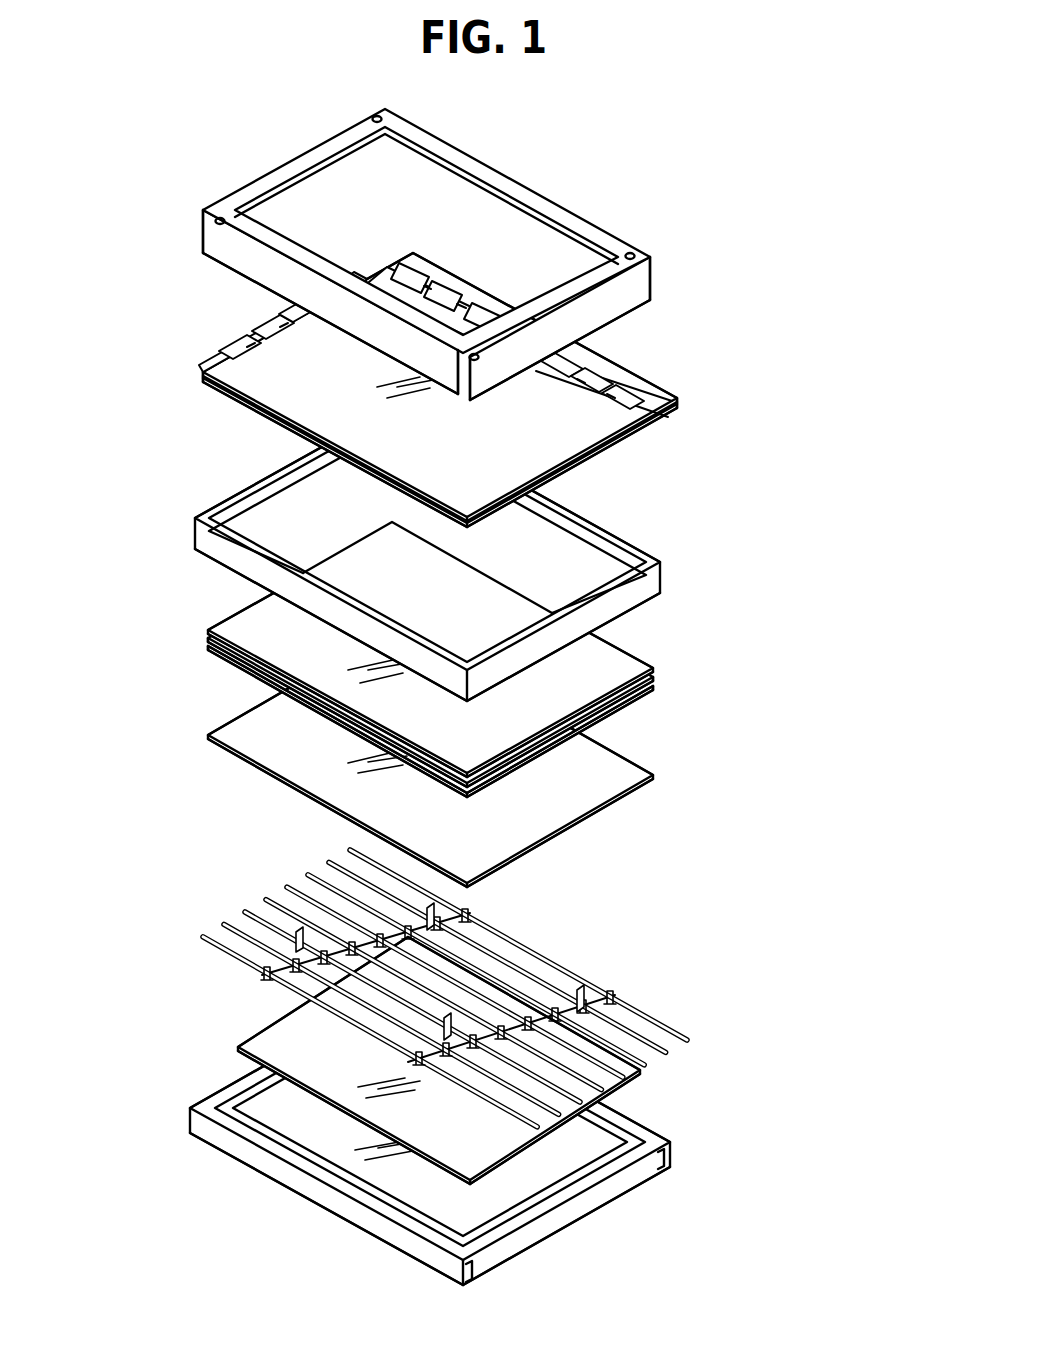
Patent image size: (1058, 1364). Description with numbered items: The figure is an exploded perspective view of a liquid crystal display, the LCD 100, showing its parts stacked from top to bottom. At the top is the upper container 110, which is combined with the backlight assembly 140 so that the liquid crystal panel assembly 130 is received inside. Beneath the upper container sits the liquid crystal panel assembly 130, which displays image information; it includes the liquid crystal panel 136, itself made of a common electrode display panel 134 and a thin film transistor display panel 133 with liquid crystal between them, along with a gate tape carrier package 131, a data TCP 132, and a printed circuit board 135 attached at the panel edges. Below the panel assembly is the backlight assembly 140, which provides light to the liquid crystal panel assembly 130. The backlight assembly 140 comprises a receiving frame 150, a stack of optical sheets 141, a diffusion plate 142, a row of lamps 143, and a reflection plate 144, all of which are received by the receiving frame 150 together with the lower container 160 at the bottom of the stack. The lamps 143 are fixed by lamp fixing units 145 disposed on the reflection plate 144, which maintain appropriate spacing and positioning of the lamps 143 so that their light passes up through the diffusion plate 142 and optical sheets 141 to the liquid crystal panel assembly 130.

The LCD 100 is at (567, 101).
The upper container 110 is at (608, 238).
The liquid crystal panel assembly 130 is at (493, 368).
The gate tape carrier package 131 is at (240, 340).
The data TCP 132 is at (405, 270).
The thin film transistor display panel 133 is at (653, 405).
The common electrode display panel 134 is at (633, 433).
The printed circuit board 135 is at (415, 276).
The liquid crystal panel 136 is at (497, 390).
The backlight assembly 140 is at (504, 878).
The optical sheets 141 is at (459, 661).
The diffusion plate 142 is at (642, 746).
The lamps 143 is at (647, 1013).
The reflection plate 144 is at (377, 1116).
The lamp fixing units 145 is at (630, 983).
The receiving frame 150 is at (653, 578).
The lower container 160 is at (517, 1238).